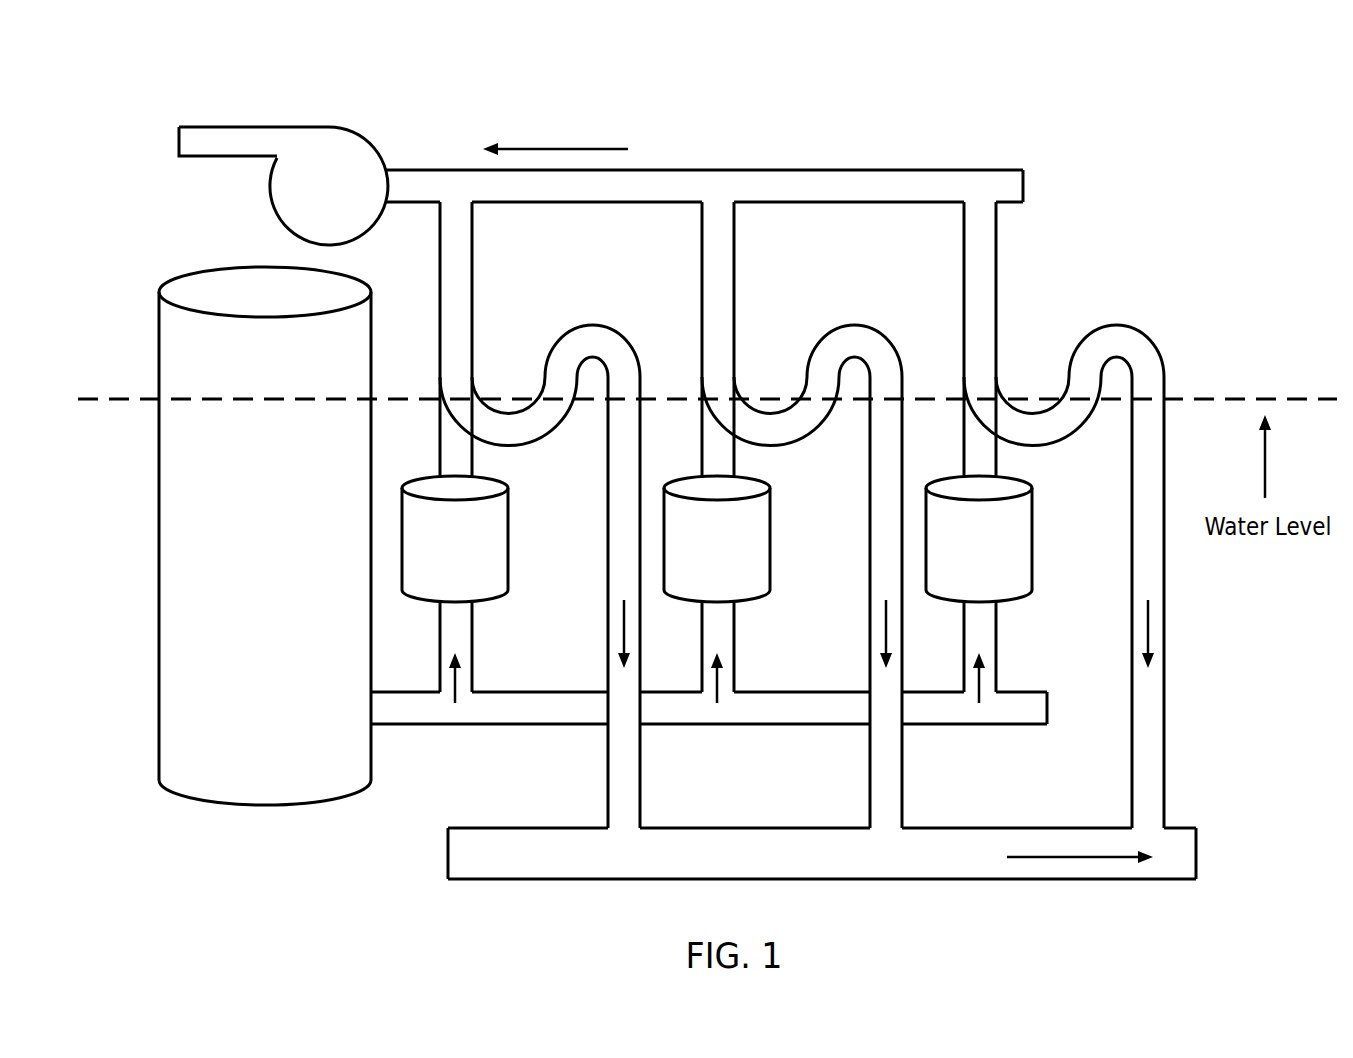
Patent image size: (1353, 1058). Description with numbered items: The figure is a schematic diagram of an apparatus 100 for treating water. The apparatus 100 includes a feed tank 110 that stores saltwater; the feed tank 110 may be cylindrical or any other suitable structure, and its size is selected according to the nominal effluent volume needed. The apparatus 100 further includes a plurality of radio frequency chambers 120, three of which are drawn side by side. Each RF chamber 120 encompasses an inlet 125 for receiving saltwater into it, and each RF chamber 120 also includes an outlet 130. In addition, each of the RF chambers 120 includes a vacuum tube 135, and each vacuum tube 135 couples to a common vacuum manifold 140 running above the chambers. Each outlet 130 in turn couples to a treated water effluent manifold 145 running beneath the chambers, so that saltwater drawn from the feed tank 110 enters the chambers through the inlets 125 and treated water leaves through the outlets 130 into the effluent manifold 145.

The apparatus 100 is at (131, 70).
The feed tank 110 is at (246, 562).
The radio frequency (RF) chamber 120 is at (436, 562).
The inlet 125 is at (490, 724).
The outlet 130 is at (592, 325).
The vacuum tube 135 is at (472, 262).
The vacuum manifold 140 is at (826, 187).
The treated water effluent manifold 145 is at (528, 828).